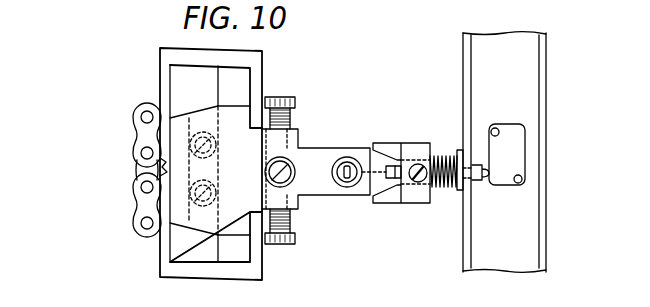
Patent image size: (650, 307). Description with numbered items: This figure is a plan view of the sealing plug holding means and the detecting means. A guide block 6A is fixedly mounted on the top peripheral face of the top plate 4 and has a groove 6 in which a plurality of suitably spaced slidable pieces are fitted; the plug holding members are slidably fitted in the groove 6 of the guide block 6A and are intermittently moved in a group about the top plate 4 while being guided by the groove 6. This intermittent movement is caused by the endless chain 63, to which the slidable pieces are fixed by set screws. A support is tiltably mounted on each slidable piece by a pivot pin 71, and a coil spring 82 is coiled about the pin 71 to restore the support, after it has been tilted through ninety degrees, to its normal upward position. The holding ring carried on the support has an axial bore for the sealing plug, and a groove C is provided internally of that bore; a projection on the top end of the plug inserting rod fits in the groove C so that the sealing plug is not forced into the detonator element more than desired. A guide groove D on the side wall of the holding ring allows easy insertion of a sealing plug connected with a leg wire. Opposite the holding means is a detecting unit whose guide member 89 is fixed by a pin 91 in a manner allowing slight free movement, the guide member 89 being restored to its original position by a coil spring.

The top plate 4 is at (257, 72).
The groove 6 is at (197, 78).
The guide block 6A is at (173, 85).
The endless chain 63 is at (142, 128).
The pivot pin 71 is at (287, 97).
The coil spring 82 is at (288, 113).
The guide member 89 is at (391, 146).
The pin 91 is at (417, 168).
The groove C is at (348, 176).
The guide groove D is at (364, 173).